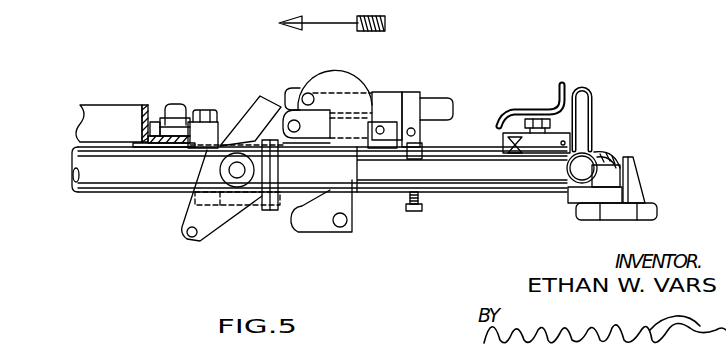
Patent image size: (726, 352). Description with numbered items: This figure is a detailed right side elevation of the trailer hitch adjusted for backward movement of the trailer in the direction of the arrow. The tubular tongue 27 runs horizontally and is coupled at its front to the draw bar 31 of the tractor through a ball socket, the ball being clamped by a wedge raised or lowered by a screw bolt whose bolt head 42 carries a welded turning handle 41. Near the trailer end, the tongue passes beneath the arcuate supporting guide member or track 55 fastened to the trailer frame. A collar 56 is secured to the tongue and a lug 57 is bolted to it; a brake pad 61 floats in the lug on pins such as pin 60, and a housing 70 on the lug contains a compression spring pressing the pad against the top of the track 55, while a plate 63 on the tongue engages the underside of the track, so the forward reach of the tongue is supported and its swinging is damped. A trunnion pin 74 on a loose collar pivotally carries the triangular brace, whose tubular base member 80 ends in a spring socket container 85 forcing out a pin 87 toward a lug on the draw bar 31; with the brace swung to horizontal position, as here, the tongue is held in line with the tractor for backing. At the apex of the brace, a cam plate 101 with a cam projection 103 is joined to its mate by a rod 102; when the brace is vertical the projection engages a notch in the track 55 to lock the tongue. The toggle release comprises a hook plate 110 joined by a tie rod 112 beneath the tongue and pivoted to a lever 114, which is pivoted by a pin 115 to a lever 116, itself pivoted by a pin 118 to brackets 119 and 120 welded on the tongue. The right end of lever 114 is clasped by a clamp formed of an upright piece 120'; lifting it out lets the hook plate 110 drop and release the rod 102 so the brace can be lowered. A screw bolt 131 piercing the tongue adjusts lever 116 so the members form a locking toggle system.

The tubular tongue 27 is at (133, 188).
The draw bar 31 is at (659, 209).
The turning handle 41 is at (534, 121).
The bolt head 42 is at (544, 124).
The supporting guide member or track 55 is at (108, 112).
The collar 56 is at (203, 158).
The lug 57 is at (189, 125).
The pin 60 is at (154, 100).
The brake pad 61 is at (142, 130).
The plate 63 is at (168, 151).
The housing 70 is at (176, 103).
The trunnion pin 74 is at (240, 172).
The tubular base member 80 is at (588, 107).
The spring socket container 85 is at (467, 170).
The pin 87 is at (611, 158).
The cam plate 101 is at (190, 215).
The rod 102 is at (196, 238).
The cam projection 103 is at (269, 97).
The hook plate 110 is at (325, 232).
The tie rod 112 is at (342, 245).
The lever 114 is at (378, 102).
The pin 115 is at (283, 110).
The lever 116 is at (311, 130).
The pin 118 is at (380, 134).
The bracket 119 is at (308, 93).
The bracket 120 is at (403, 107).
The upright piece 120' is at (455, 84).
The screw bolt 131 is at (414, 213).